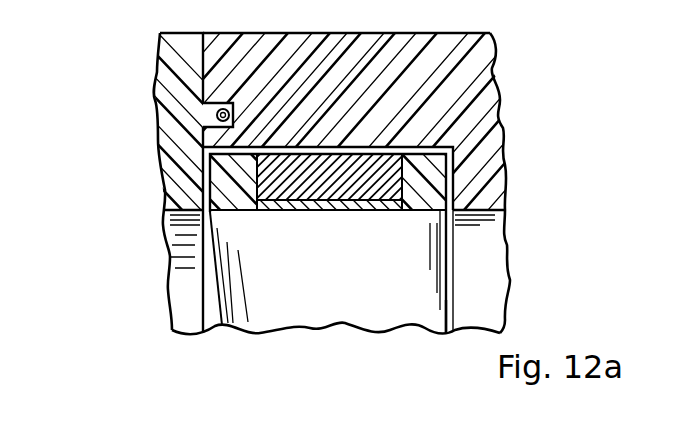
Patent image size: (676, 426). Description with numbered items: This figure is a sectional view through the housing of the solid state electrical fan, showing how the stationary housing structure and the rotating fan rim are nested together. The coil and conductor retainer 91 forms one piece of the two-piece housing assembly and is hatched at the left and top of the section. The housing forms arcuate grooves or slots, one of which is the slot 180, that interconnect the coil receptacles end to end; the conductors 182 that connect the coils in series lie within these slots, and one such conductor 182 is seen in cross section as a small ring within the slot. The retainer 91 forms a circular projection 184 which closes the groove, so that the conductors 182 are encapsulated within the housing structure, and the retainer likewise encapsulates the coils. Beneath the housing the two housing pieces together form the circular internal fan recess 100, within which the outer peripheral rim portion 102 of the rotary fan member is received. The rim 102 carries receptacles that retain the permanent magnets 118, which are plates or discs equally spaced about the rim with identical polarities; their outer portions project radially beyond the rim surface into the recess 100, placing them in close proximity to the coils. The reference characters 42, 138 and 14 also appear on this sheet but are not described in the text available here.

The coil and conductor retainer 91 is at (183, 33).
The arcuate groove or slot 180 is at (226, 101).
The circular projection 184 is at (205, 108).
The conductors 182 is at (217, 115).
The circular internal fan recess 100 is at (433, 191).
The permanent magnets 118 is at (400, 160).
The outer peripheral rim portion 102 is at (427, 253).
The frame 42 is at (437, 313).
The component 138 is at (197, 425).
The section line 14 is at (300, 425).